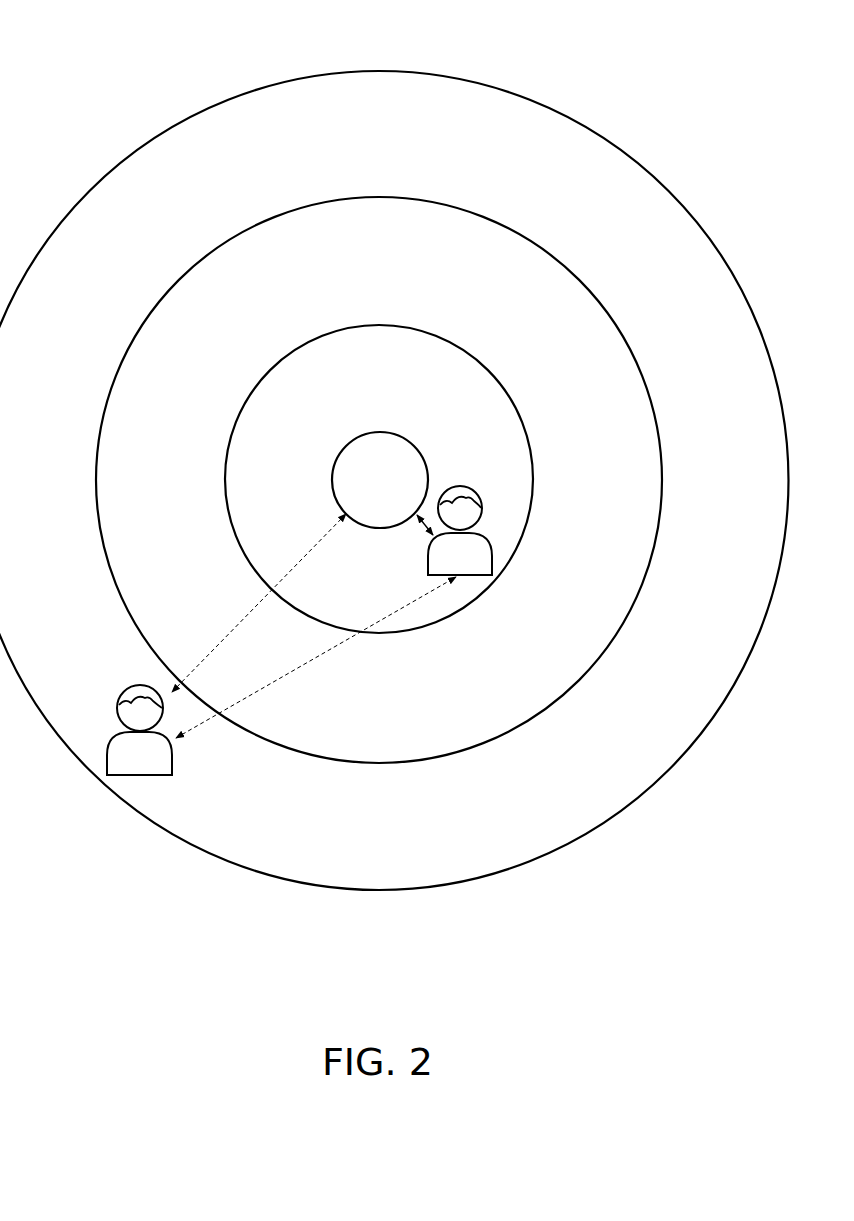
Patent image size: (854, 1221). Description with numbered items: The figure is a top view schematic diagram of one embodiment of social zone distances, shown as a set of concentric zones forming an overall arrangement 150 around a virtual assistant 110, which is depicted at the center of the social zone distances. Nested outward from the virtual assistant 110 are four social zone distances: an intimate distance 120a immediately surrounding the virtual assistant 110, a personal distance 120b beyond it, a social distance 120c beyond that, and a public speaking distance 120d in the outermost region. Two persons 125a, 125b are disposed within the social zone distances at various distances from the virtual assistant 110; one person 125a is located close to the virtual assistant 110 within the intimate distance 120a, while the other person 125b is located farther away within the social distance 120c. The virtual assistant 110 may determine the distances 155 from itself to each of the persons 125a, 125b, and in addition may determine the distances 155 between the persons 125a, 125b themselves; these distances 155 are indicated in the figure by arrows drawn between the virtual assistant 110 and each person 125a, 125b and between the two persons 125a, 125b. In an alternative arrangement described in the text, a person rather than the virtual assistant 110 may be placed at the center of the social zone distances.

The environment 150 is at (92, 80).
The virtual assistant 110 is at (380, 480).
The intimate distance 120a is at (379, 479).
The personal distance 120b is at (379, 480).
The social distance 120c is at (394, 480).
The public speaking distance 120d is at (380, 972).
The person 125a is at (460, 530).
The person 125b is at (139, 730).
The distances 155 is at (428, 527).